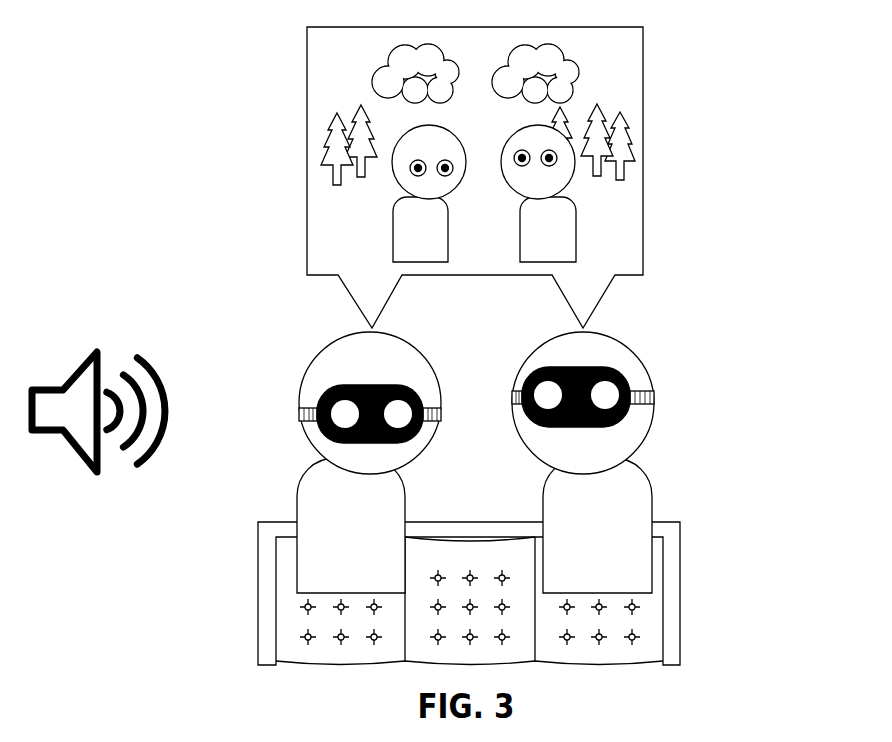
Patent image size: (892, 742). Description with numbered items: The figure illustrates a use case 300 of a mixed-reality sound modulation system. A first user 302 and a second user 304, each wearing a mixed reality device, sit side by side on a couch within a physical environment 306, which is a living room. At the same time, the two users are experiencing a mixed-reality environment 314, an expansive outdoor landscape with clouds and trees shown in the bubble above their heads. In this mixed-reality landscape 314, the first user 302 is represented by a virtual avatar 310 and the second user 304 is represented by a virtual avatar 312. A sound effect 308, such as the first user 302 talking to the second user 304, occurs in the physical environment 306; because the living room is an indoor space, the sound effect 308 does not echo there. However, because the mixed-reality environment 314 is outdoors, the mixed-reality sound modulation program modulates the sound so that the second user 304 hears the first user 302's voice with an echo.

The use case 300 is at (193, 78).
The first user 302 is at (315, 462).
The second user 304 is at (656, 462).
The physical environment 306 is at (520, 603).
The sound effect 308 is at (98, 417).
The virtual avatar 310 is at (393, 200).
The virtual avatar 312 is at (575, 203).
The mixed-reality environment 314 is at (459, 181).